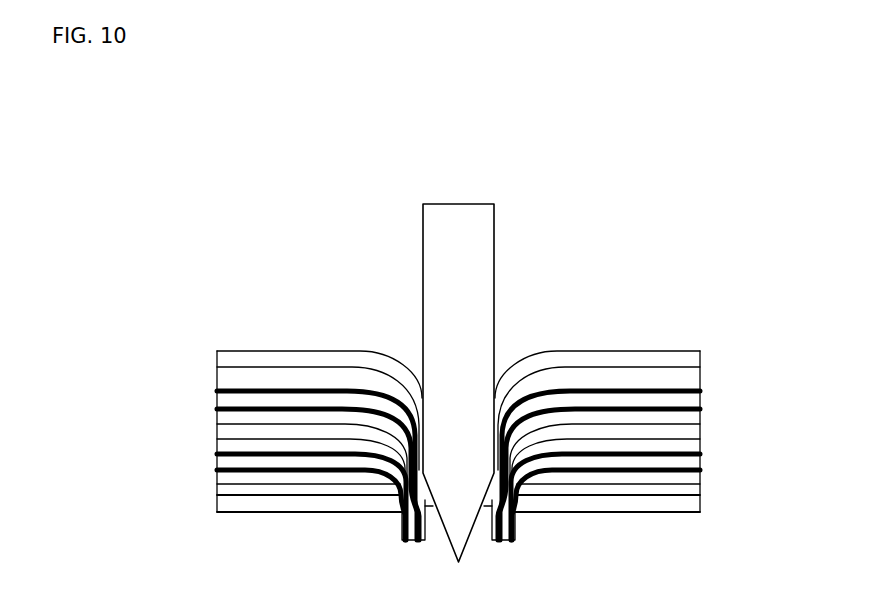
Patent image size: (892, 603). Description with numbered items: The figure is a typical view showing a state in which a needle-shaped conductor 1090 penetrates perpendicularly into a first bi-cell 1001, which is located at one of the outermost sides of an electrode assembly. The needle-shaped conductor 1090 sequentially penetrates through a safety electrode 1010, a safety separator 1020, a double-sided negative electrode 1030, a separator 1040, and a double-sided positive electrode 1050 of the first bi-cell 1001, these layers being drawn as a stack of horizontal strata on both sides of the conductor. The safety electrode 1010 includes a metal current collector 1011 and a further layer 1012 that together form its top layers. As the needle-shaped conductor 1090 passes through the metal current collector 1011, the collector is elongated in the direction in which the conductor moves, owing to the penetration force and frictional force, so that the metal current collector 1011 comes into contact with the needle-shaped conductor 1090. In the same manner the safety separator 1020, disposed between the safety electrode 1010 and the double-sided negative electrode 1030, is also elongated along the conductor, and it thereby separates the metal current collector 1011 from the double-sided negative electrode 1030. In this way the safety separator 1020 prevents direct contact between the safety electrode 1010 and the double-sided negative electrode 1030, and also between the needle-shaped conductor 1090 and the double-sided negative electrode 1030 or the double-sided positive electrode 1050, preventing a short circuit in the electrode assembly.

The first bi-cell 1001 is at (277, 250).
The safety electrode 1010 is at (100, 332).
The metal current collector 1011 is at (217, 362).
The second top layer 1012 is at (217, 377).
The safety separator 1020 is at (702, 398).
The double-sided negative electrode 1030 is at (205, 425).
The separator 1040 is at (702, 453).
The double-sided positive electrode 1050 is at (205, 472).
The needle-shaped conductor 1090 is at (460, 203).